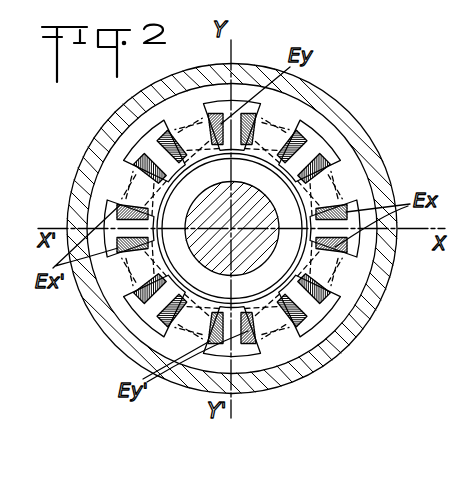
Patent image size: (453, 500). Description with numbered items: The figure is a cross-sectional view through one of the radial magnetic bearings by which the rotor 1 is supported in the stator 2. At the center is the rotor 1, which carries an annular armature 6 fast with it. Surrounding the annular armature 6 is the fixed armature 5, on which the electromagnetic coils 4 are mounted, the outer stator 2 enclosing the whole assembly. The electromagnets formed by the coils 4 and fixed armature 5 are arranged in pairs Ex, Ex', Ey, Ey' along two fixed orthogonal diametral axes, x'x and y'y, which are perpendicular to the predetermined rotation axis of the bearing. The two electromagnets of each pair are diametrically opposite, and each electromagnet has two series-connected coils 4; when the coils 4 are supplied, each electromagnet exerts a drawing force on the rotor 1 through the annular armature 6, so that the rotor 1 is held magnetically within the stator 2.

The rotor 1 is at (253, 247).
The stator 2 is at (358, 316).
The electromagnetic coils 4 is at (297, 142).
The fixed armature 5 is at (294, 113).
The annular armature 6 is at (283, 205).